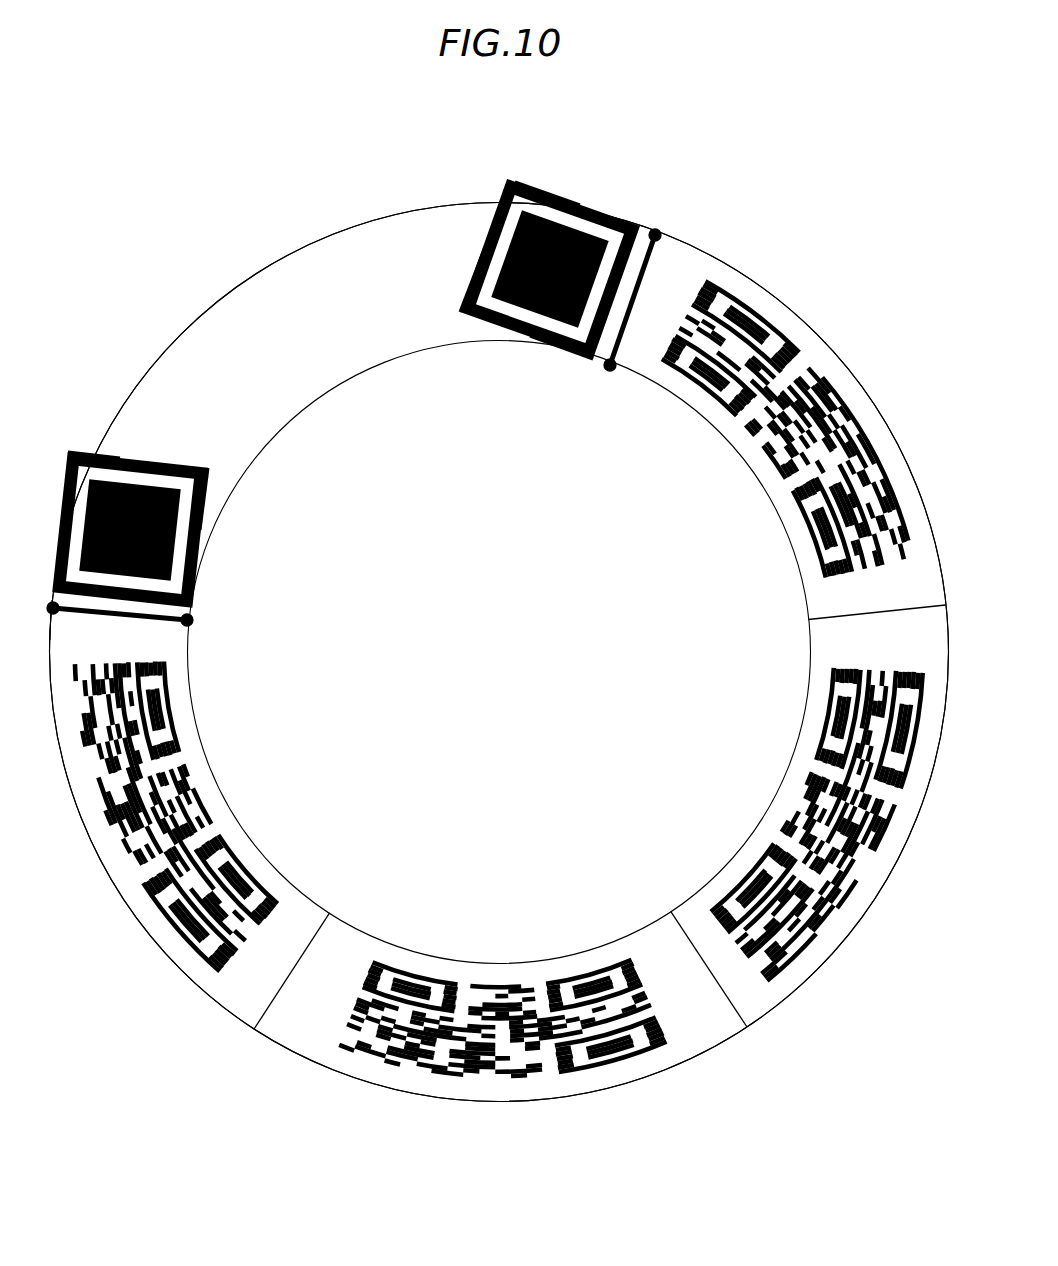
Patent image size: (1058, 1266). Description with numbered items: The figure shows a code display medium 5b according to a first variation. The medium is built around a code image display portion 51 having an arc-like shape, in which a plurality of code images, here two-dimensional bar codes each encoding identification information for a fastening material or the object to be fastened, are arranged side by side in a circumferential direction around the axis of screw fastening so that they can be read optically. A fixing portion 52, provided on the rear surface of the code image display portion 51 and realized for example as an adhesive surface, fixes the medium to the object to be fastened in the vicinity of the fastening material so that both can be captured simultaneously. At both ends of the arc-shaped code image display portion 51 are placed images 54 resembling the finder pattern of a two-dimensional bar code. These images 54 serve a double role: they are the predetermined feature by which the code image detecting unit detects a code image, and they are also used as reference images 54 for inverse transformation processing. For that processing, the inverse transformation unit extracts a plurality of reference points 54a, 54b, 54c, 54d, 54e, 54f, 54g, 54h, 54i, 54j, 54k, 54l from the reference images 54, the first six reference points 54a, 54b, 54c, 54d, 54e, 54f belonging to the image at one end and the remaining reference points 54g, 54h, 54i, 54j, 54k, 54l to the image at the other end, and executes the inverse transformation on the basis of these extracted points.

The code display medium 5b is at (836, 200).
The code image display portion 51 is at (816, 367).
The fixing portion 52 is at (492, 1103).
The images resembling a finder pattern 54 is at (573, 200).
The reference point 54a is at (515, 174).
The reference point 54b is at (637, 221).
The reference point 54c is at (661, 234).
The reference point 54d is at (470, 317).
The reference point 54e is at (595, 357).
The reference point 54f is at (613, 368).
The reference point 54g is at (72, 447).
The reference point 54h is at (53, 608).
The reference point 54i is at (58, 618).
The reference point 54j is at (210, 470).
The reference point 54k is at (195, 588).
The reference point 54l is at (191, 624).